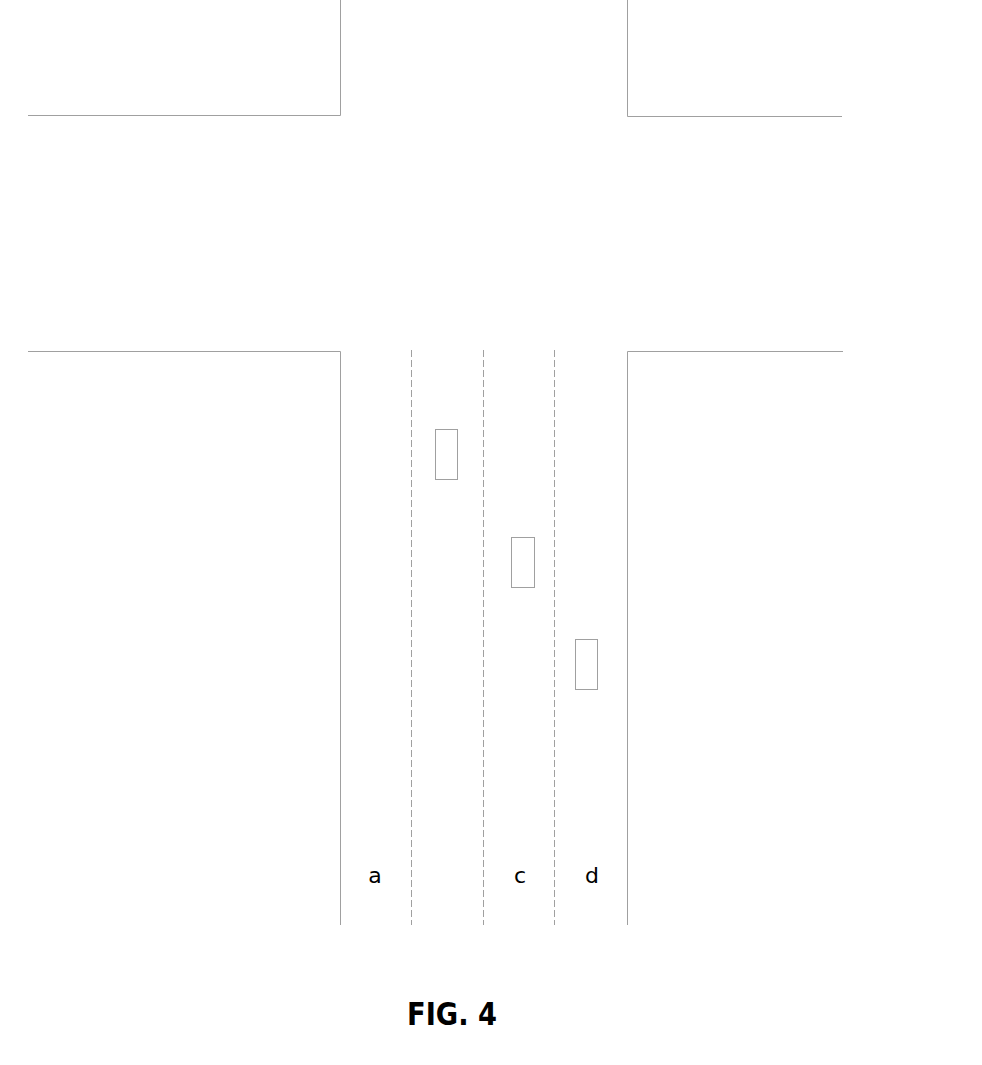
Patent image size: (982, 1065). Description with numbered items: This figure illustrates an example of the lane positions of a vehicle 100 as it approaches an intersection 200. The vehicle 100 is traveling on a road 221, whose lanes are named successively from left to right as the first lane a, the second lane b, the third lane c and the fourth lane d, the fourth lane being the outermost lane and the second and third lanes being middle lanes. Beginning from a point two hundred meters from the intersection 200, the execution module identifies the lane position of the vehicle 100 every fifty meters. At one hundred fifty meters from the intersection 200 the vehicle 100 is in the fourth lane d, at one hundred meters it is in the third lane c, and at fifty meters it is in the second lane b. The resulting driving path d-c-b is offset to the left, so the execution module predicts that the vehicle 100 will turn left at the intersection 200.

The intersection 200 is at (506, 270).
The road 221 is at (459, 690).
The vehicle 100 is at (573, 637).